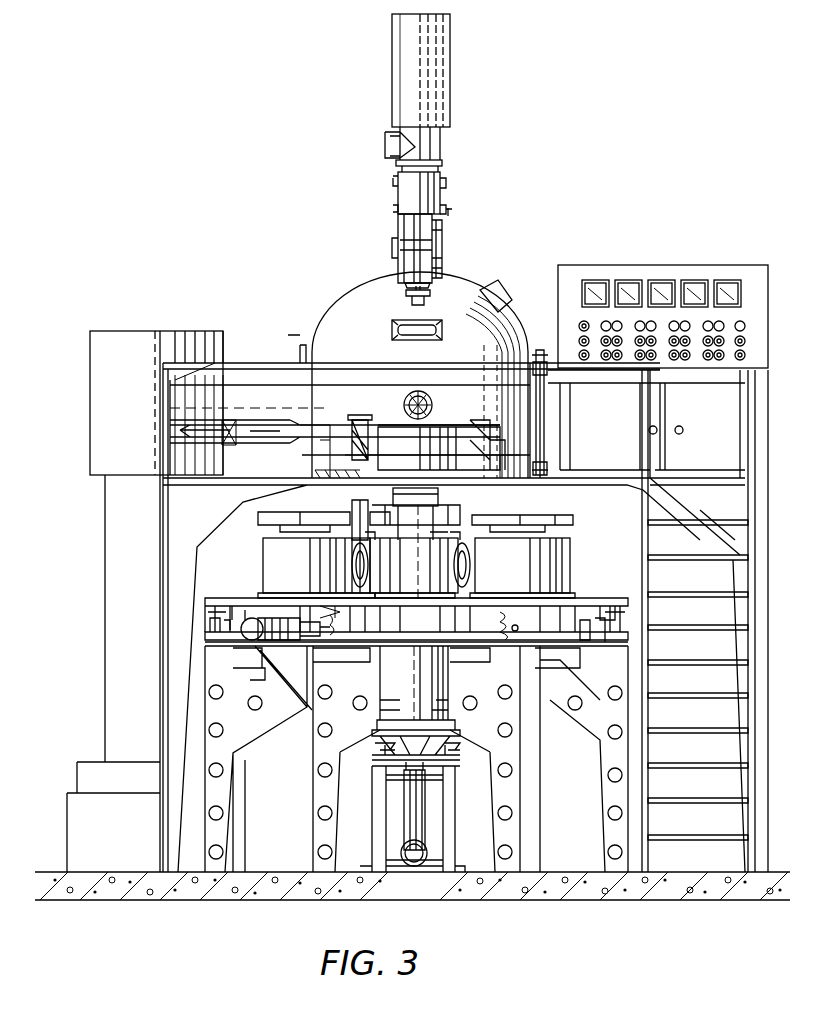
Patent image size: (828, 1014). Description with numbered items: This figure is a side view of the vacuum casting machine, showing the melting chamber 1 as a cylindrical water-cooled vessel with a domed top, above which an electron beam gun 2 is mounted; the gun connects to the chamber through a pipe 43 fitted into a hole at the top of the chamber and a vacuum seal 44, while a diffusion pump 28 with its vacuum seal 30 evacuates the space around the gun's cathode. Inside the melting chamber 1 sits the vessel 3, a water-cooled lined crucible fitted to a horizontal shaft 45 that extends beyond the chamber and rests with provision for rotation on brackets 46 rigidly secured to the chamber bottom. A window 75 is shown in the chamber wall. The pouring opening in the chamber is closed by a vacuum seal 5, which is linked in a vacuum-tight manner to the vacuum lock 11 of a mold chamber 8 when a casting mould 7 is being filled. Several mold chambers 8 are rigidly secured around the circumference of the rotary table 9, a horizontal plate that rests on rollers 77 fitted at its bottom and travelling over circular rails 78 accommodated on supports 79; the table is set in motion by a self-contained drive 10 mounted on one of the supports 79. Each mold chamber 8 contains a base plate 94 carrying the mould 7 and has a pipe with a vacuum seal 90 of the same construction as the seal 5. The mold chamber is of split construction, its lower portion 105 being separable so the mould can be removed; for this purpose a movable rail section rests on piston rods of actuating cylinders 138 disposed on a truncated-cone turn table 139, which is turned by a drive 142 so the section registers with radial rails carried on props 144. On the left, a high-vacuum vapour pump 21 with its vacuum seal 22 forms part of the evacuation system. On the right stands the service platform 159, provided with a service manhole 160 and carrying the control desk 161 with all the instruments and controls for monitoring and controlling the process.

The melting chamber 1 is at (487, 282).
The electron beam guns 2 is at (450, 42).
The vessel 3 is at (440, 428).
The vacuum seal 5 is at (438, 498).
The casting mould 7 is at (445, 681).
The mold chamber 8 is at (263, 552).
The rotary table 9 is at (604, 594).
The drive 10 is at (305, 620).
The vacuum lock 11 is at (505, 520).
The high-vacuum vapour pump 21 is at (105, 541).
The vacuum seal 22 is at (122, 338).
The diffusion pump 28 is at (400, 230).
The vacuum seal 30 is at (441, 192).
The pipes 43 is at (432, 284).
The vacuum seals 44 is at (442, 247).
The horizontal shaft 45 is at (340, 428).
The brackets 46 is at (370, 428).
The inspection window 75 is at (442, 331).
The rollers 77 is at (212, 626).
The circular rails 78 is at (614, 635).
The supports 79 is at (310, 738).
The vacuum seal 90 is at (362, 510).
The base plate 94 is at (440, 722).
The lower portion 105 is at (475, 728).
The actuating cylinders 138 is at (405, 802).
The turn table 139 is at (458, 868).
The drive 142 is at (412, 887).
The props 144 is at (450, 802).
The service platform 159 is at (240, 478).
The service manhole 160 is at (540, 356).
The control desk 161 is at (656, 268).